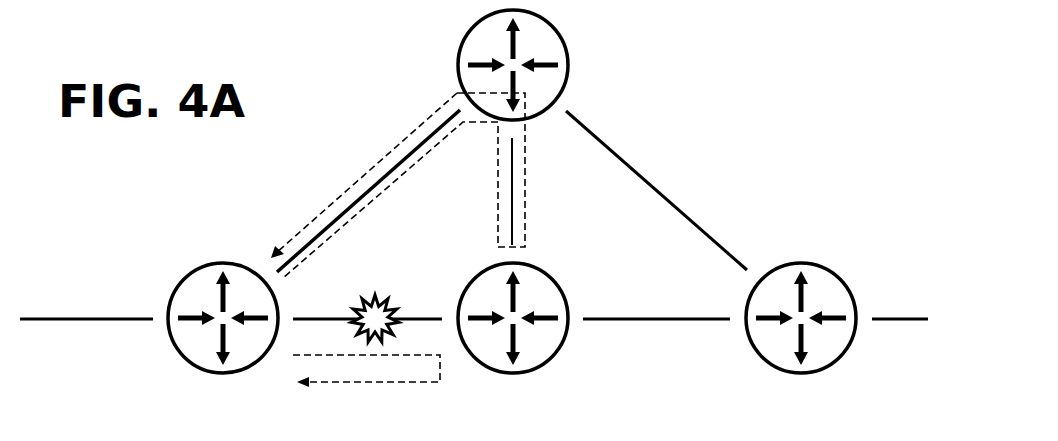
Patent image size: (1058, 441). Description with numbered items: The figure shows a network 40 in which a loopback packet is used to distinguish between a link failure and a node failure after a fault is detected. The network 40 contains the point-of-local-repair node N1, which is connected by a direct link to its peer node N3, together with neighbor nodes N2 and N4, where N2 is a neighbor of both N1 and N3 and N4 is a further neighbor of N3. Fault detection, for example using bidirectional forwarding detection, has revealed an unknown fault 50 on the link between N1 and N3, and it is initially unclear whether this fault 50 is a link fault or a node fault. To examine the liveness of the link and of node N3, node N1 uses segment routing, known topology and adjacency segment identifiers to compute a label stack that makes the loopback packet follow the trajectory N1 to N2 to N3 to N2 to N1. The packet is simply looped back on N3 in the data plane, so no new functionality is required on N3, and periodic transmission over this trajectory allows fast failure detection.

The network 40 is at (757, 129).
The unknown fault 50 is at (383, 297).
The PLR node N1 is at (200, 339).
The neighbor node N2 is at (536, 65).
The peer node N3 is at (513, 338).
The neighbor node N4 is at (801, 338).